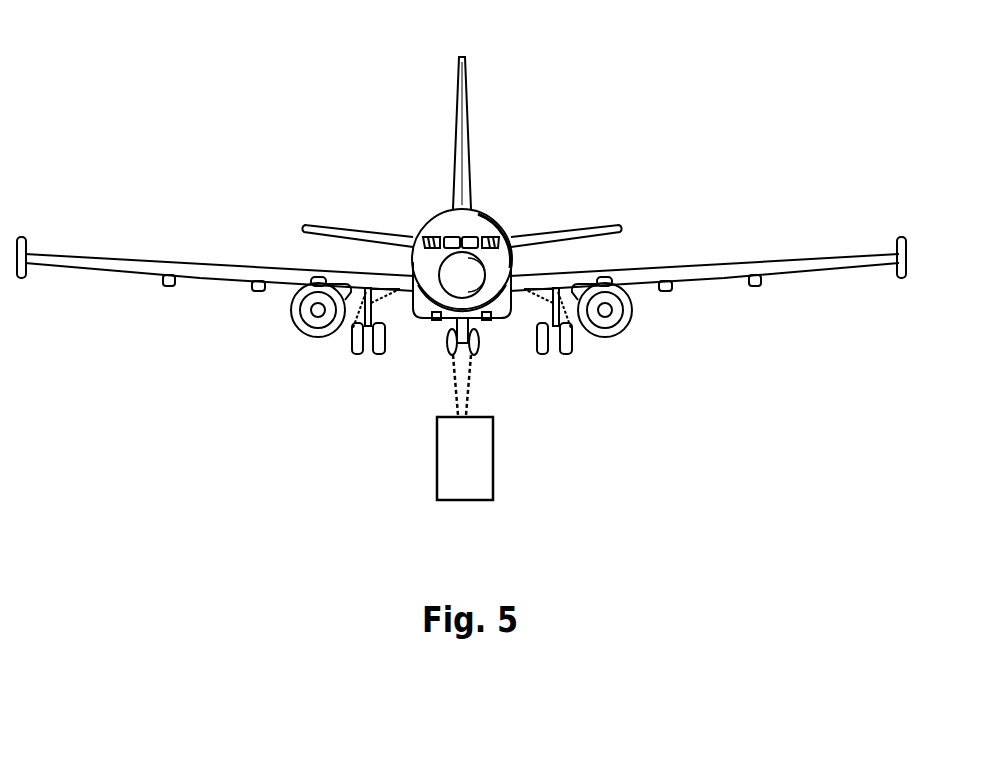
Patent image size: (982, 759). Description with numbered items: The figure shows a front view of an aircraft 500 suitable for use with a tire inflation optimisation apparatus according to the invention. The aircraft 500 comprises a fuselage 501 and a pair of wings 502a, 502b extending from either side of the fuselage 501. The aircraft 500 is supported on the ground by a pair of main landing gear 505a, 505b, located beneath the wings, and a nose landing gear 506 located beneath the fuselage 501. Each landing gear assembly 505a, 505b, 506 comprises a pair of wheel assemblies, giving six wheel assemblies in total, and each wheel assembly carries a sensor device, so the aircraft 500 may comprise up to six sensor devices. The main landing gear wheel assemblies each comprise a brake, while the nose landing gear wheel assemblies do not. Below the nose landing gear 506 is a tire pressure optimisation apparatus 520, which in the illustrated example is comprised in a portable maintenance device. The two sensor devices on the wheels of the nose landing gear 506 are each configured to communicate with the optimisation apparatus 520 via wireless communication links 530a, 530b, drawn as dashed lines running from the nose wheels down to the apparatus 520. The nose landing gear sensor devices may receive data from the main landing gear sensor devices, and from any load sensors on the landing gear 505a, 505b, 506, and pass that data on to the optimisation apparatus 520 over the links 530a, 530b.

The aircraft 500 is at (311, 58).
The fuselage 501 is at (478, 214).
The wing 502a is at (160, 263).
The wing 502b is at (703, 263).
The main landing gear 505a is at (348, 371).
The main landing gear 505b is at (567, 372).
The nose landing gear 506 is at (490, 360).
The tire pressure optimisation apparatus 520 is at (462, 453).
The wireless communication link 530a is at (457, 383).
The wireless communication link 530b is at (467, 382).